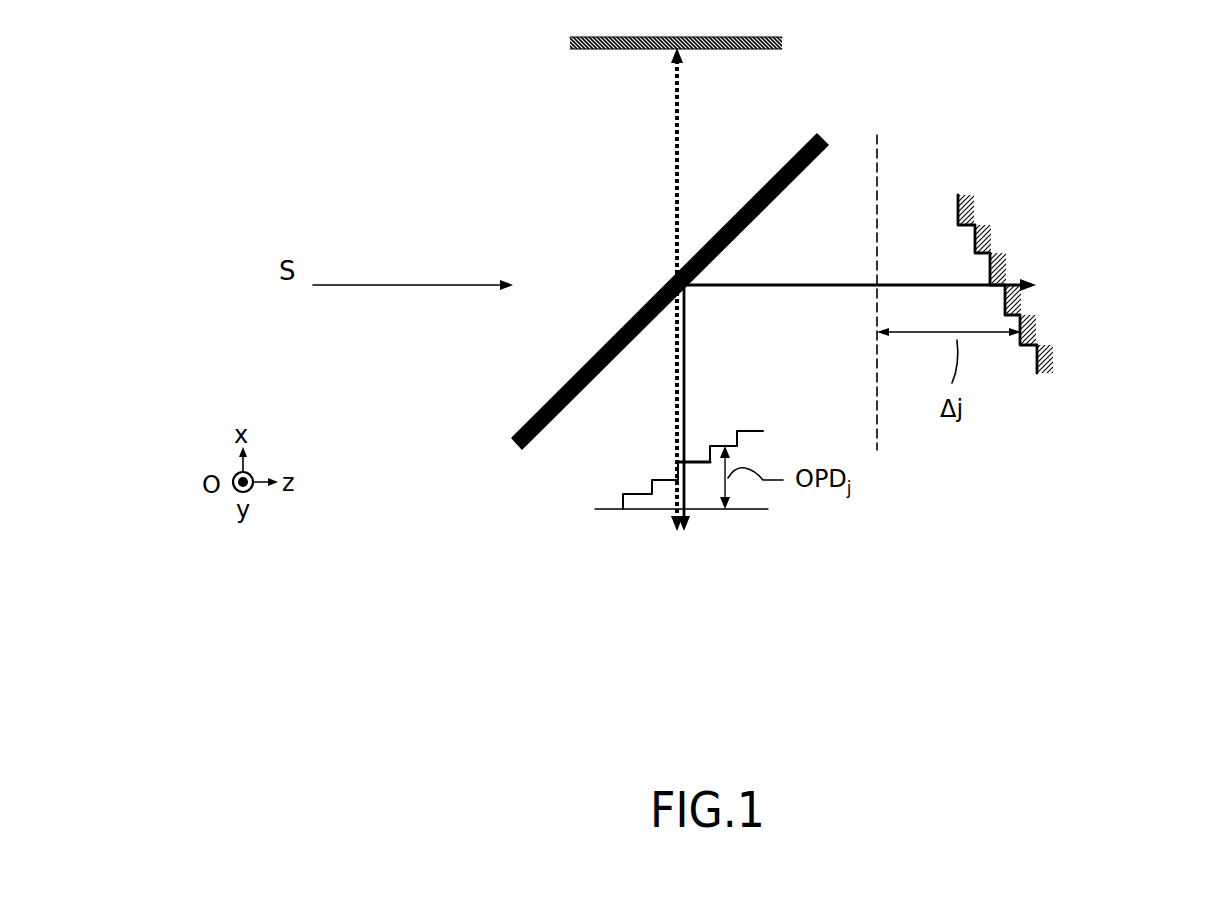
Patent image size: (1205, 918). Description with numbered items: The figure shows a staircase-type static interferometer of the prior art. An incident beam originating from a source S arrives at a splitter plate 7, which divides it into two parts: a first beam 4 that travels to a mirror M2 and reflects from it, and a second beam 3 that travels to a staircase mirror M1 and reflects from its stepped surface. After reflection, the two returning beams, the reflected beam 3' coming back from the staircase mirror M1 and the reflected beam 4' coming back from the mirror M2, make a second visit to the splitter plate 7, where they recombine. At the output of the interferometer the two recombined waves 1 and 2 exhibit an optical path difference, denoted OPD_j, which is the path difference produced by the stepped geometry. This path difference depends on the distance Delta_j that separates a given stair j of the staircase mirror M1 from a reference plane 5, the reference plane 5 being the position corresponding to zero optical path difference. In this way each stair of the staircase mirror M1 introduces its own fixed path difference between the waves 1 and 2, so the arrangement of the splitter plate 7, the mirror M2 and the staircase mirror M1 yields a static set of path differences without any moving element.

The wave 1 is at (760, 423).
The wave 2 is at (752, 512).
The second beam 3 is at (860, 316).
The reflected beam 3' is at (729, 408).
The first beam 4 is at (627, 166).
The reflected beam 4' is at (630, 408).
The reference plane 5 is at (878, 158).
The splitter plate 7 is at (532, 413).
The staircase mirror M1 is at (1060, 362).
The mirror M2 is at (787, 43).